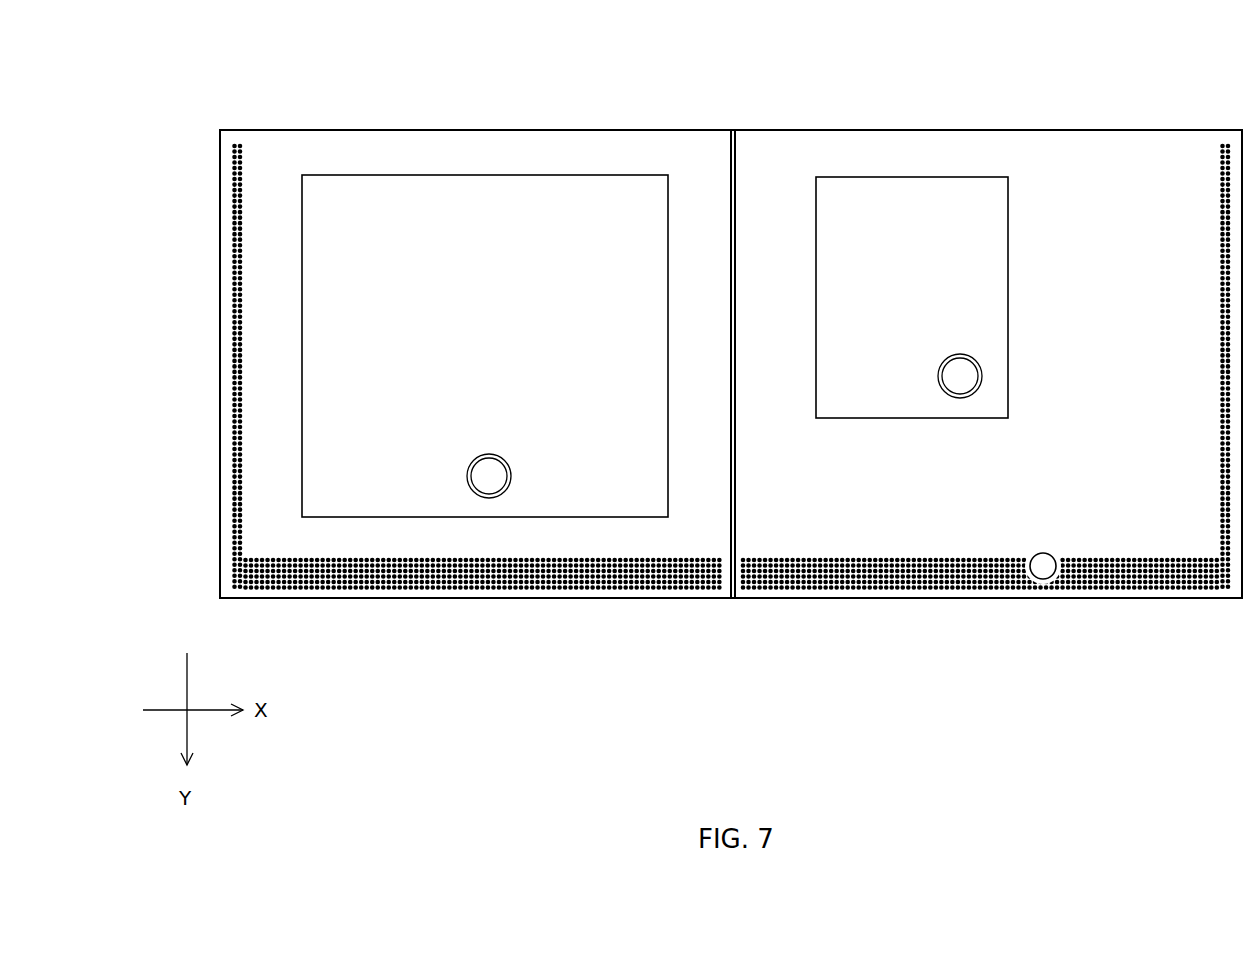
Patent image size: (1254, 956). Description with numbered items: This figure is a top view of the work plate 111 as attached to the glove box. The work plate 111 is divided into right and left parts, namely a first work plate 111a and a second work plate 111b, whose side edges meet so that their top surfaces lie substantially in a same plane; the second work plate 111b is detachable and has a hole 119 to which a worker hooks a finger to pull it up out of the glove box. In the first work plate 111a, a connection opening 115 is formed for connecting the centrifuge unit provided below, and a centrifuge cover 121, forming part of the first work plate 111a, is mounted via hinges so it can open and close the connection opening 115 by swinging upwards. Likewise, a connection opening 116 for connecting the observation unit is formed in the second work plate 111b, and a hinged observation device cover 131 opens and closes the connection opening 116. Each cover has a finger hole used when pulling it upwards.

The work plate 111 is at (307, 76).
The first work plate 111a is at (522, 130).
The second work plate 111b is at (947, 130).
The connection opening 115 is at (377, 518).
The centrifuge cover 121 is at (565, 398).
The observation device cover 131 is at (876, 342).
The connection opening 116 is at (910, 420).
The hole 119 is at (1048, 578).